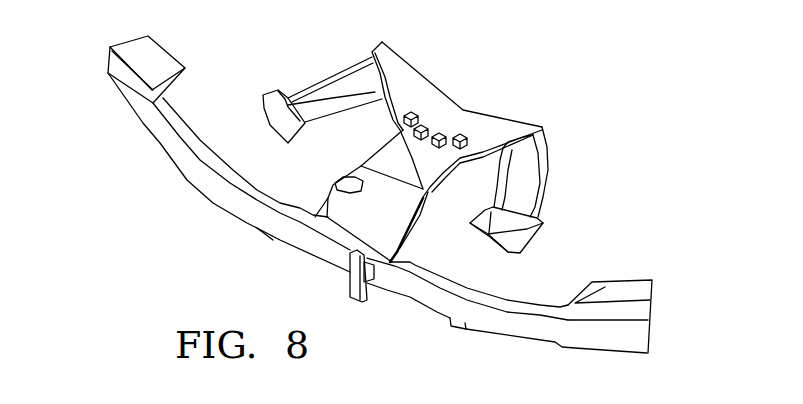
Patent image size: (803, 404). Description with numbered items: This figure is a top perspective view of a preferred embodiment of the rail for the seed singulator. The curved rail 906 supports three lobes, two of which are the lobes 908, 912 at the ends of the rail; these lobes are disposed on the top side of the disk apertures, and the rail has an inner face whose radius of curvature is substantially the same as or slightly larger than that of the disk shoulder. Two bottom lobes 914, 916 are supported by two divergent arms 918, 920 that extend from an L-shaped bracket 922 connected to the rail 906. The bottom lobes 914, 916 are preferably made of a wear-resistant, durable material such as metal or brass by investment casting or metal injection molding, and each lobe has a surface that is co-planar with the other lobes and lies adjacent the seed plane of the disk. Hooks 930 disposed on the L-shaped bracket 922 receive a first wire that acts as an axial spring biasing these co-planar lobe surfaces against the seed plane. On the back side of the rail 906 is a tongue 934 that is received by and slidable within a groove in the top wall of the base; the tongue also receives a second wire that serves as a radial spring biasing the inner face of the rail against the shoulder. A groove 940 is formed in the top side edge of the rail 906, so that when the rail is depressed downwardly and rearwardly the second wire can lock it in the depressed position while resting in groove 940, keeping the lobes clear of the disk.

The rail 906 is at (200, 177).
The lobe 908 is at (137, 45).
The lobe 912 is at (630, 290).
The bottom lobe 914 is at (263, 123).
The bottom lobe 916 is at (505, 238).
The divergent arm 918 is at (335, 80).
The divergent arm 920 is at (535, 187).
The L-shaped bracket 922 is at (380, 168).
The hooks 930 is at (440, 135).
The tongue 934 is at (353, 275).
The groove 940 is at (447, 325).